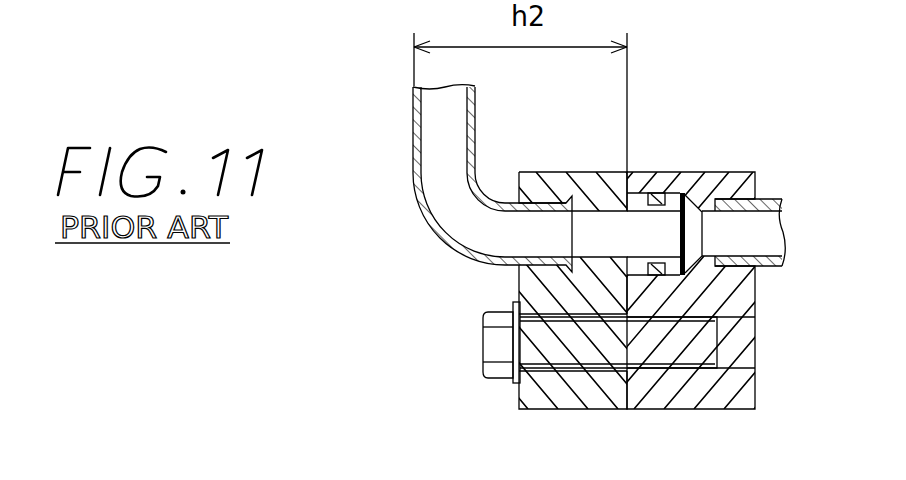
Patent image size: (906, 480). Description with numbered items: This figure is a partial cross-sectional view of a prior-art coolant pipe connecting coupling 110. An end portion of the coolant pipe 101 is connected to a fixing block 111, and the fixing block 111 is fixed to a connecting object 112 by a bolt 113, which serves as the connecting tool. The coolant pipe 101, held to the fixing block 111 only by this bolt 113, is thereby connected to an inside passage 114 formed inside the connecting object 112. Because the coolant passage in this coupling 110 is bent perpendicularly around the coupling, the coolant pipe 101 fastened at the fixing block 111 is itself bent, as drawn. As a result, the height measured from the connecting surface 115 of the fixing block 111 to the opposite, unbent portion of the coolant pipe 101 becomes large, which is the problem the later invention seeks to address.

The coolant pipe connecting coupling 110 is at (476, 415).
The coolant pipe 101 is at (416, 147).
The fixing block 111 is at (554, 405).
The connecting object 112 is at (704, 400).
The bolt 113 is at (492, 345).
The inside passage 114 is at (705, 227).
The connecting surface 115 is at (633, 185).